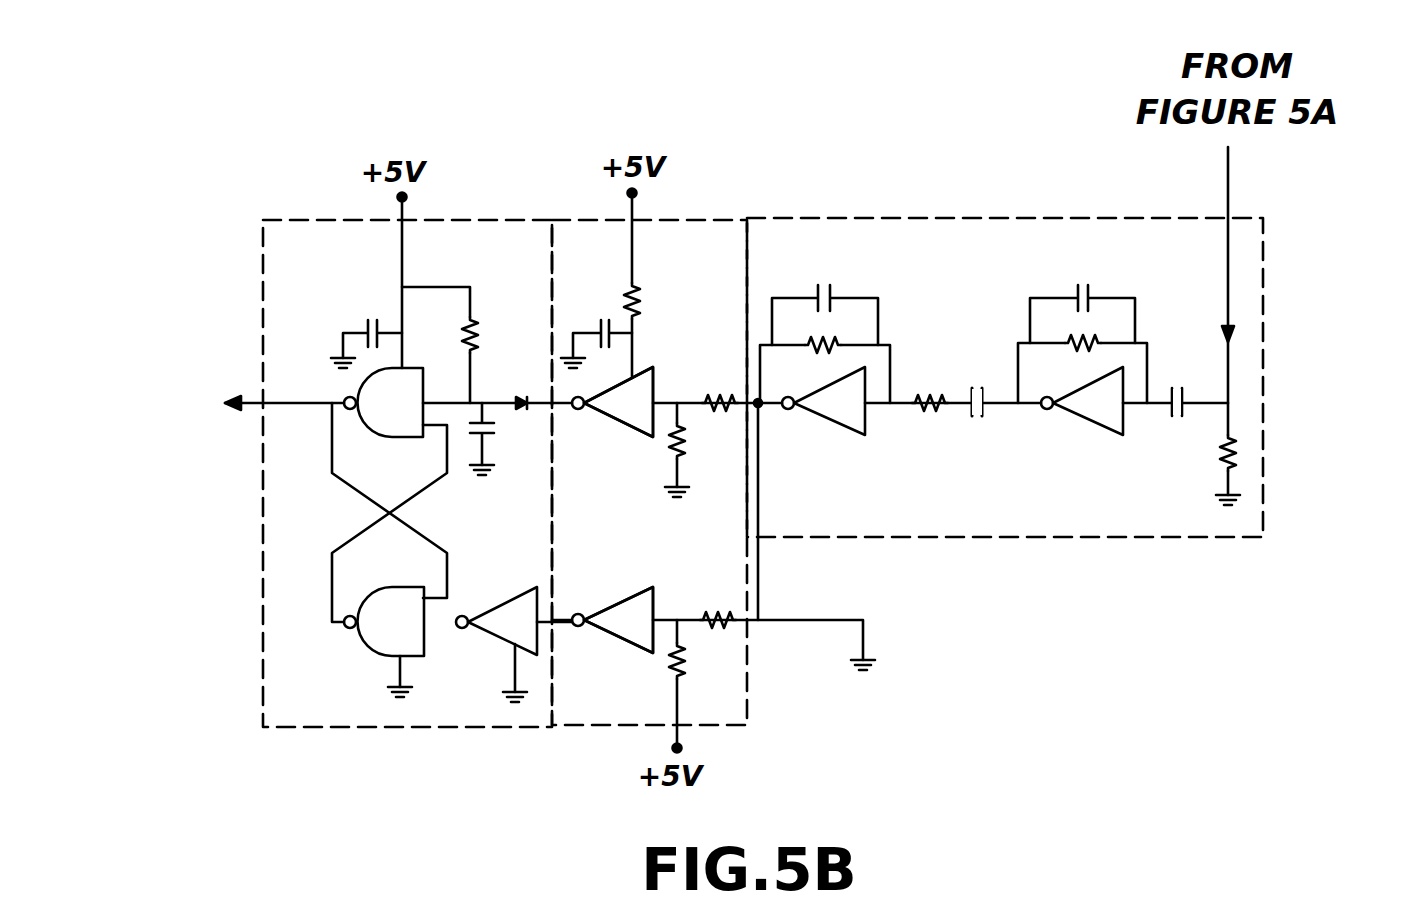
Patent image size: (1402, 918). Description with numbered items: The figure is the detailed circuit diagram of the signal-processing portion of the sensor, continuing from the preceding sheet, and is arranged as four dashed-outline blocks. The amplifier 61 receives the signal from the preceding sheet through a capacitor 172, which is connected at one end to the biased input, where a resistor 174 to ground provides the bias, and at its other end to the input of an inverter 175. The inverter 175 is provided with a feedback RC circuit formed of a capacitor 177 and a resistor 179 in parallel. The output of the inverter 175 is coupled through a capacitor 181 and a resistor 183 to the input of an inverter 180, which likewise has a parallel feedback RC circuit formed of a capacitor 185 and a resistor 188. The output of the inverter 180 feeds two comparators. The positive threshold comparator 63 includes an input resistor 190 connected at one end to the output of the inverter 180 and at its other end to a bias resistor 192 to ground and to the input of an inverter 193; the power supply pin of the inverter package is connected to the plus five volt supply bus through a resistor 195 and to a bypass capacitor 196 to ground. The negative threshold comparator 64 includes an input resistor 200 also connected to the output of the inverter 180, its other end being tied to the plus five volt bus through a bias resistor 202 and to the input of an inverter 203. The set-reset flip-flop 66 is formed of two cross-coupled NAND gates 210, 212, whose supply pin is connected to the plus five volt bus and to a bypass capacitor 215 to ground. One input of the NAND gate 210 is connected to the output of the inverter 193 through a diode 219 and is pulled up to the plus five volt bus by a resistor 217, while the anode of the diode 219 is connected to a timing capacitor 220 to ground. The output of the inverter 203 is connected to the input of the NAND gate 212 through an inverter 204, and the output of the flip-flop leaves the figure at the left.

The amplifier 61 is at (1252, 285).
The positive threshold comparator 63 is at (674, 351).
The negative threshold comparator 64 is at (705, 697).
The set-reset flip-flop 66 is at (285, 705).
The capacitor 172 is at (1178, 387).
The resistor 174 is at (1240, 457).
The inverter 175 is at (1112, 422).
The capacitor 177 is at (1085, 283).
The resistor 179 is at (1097, 337).
The inverter 180 is at (853, 412).
The capacitor 181 is at (978, 414).
The resistor 183 is at (930, 413).
The capacitor 185 is at (822, 283).
The resistor 188 is at (837, 338).
The input resistor 190 is at (730, 412).
The bias resistor 192 is at (697, 447).
The inverter 193 is at (640, 413).
The resistor 195 is at (645, 303).
The bypass capacitor 196 is at (601, 320).
The input resistor 200 is at (718, 608).
The bias resistor 202 is at (672, 665).
The inverter 203 is at (640, 607).
The inverter 204 is at (517, 635).
The NAND gate 210 is at (363, 393).
The NAND gate 212 is at (377, 633).
The bypass capacitor 215 is at (373, 317).
The resistor 217 is at (478, 342).
The diode 219 is at (521, 390).
The timing capacitor 220 is at (490, 436).